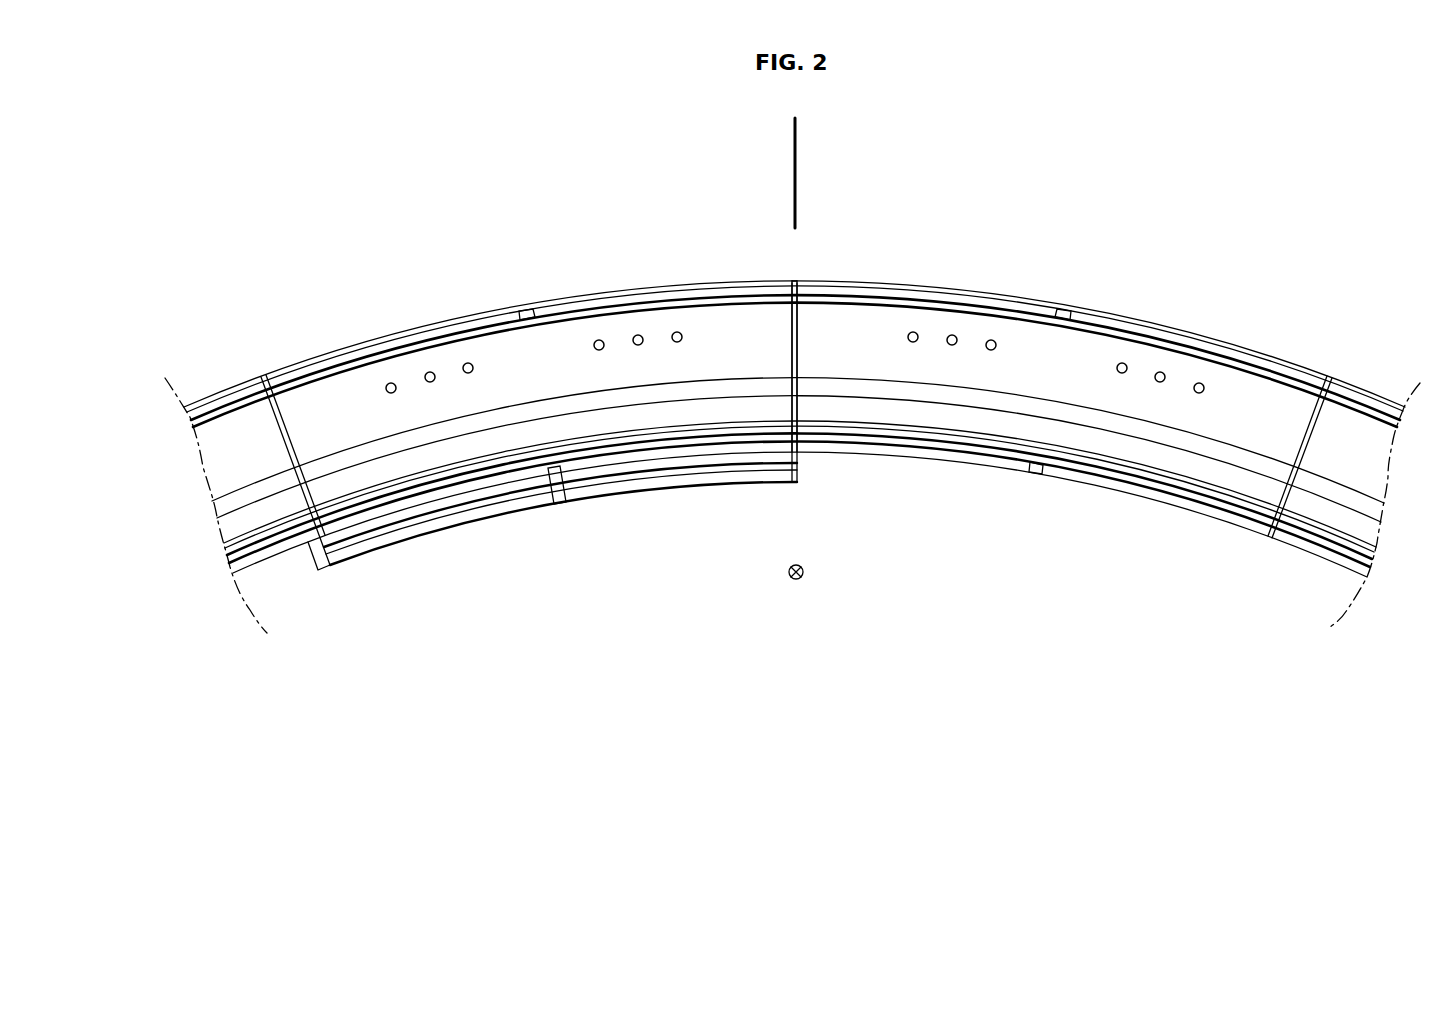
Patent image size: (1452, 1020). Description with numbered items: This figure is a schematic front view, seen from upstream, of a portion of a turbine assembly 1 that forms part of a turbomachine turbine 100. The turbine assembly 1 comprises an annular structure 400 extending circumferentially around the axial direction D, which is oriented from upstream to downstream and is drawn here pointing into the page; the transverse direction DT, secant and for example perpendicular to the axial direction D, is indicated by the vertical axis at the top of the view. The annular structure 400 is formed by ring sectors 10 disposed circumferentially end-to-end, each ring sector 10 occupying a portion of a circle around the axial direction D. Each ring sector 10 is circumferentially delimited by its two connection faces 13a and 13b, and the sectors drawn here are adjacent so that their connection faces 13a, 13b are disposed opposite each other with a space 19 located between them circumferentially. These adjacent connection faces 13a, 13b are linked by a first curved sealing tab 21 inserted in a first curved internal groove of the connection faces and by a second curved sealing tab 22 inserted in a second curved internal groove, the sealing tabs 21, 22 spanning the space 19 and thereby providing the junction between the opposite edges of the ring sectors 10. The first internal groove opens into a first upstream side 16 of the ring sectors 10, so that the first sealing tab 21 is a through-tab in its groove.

The turbine assembly 1 is at (808, 631).
The ring sector 10 is at (717, 335).
The connection face 13a is at (275, 447).
The connection face 13b is at (293, 447).
The first upstream side 16 is at (512, 365).
The space 19 is at (797, 273).
The first curved sealing tab 21 is at (793, 342).
The second curved sealing tab 22 is at (793, 342).
The turbomachine turbine 100 is at (1108, 222).
The annular structure 400 is at (191, 498).
The axial direction D is at (804, 575).
The transverse direction DT is at (805, 160).